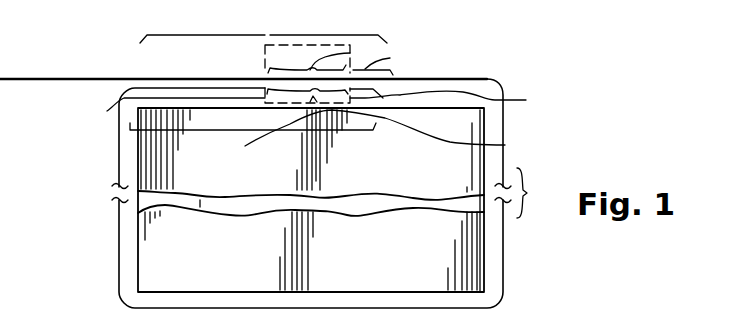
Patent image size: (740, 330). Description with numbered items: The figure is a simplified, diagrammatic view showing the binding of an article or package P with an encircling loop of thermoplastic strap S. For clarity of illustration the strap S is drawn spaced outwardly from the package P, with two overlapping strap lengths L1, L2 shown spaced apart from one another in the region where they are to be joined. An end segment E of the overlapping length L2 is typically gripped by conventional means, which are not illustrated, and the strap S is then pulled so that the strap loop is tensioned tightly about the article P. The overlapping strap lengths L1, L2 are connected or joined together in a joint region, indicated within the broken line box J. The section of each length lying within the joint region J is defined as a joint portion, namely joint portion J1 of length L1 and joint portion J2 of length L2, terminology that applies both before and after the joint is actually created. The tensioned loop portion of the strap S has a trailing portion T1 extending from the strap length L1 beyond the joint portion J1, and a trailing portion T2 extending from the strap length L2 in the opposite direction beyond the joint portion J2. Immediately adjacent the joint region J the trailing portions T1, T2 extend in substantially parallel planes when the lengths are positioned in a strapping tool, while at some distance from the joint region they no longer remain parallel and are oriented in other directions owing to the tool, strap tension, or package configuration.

The strap S is at (45, 78).
The end segment E is at (503, 101).
The joint region J is at (265, 53).
The joint portion J1 is at (350, 53).
The joint portion J2 is at (505, 145).
The strap length L1 is at (265, 35).
The strap length L2 is at (245, 146).
The trailing portion T1 is at (390, 58).
The trailing portion T2 is at (299, 105).
The package P is at (360, 195).